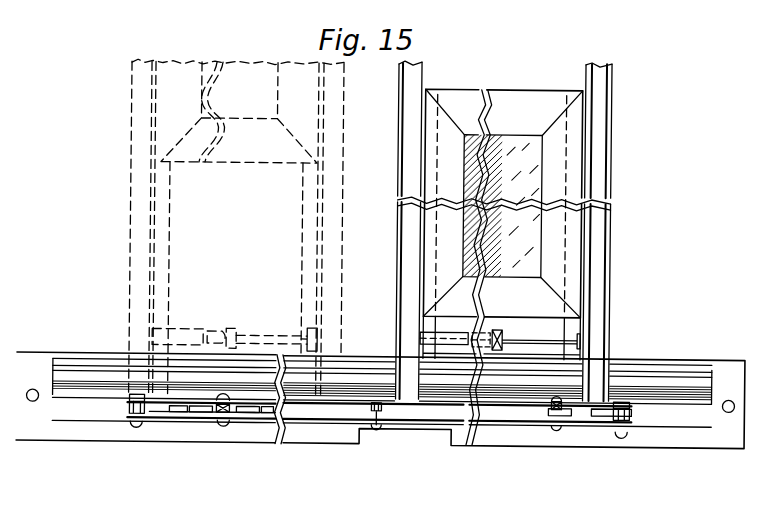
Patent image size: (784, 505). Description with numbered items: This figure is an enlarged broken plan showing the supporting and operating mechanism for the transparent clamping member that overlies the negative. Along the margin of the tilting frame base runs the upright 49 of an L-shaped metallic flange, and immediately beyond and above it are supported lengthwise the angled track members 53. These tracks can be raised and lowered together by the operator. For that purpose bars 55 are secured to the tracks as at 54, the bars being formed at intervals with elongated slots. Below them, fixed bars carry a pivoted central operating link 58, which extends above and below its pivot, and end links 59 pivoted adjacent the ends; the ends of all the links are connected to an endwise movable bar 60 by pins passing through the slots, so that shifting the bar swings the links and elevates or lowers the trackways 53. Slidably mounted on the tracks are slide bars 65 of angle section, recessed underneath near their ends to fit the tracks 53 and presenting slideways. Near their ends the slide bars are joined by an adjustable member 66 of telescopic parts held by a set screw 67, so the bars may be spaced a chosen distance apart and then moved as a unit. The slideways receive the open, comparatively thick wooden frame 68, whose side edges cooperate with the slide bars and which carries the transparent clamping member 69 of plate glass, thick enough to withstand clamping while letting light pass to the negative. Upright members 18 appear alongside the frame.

The upright post 18 is at (396, 237).
The upright of L-shaped marginal flange 49 is at (85, 355).
The tilting frame track members 53 is at (172, 382).
The securing point of bars to track members 54 is at (128, 411).
The bars 55 is at (251, 420).
The central operating link 58 is at (380, 416).
The end links 59 is at (226, 411).
The endwise movable bar 60 is at (205, 417).
The slide bars 65 is at (396, 298).
The adjustable member 66 is at (481, 330).
The set screw 67 is at (503, 335).
The frame 68 is at (514, 100).
The transparent clamping member 69 is at (515, 167).